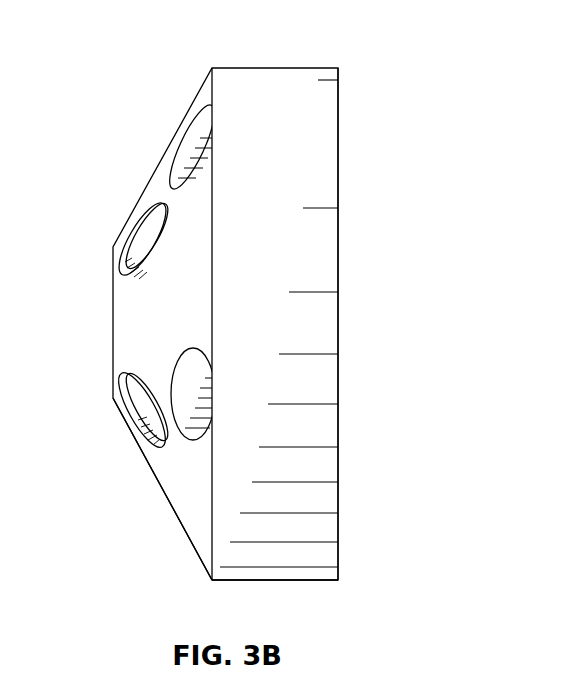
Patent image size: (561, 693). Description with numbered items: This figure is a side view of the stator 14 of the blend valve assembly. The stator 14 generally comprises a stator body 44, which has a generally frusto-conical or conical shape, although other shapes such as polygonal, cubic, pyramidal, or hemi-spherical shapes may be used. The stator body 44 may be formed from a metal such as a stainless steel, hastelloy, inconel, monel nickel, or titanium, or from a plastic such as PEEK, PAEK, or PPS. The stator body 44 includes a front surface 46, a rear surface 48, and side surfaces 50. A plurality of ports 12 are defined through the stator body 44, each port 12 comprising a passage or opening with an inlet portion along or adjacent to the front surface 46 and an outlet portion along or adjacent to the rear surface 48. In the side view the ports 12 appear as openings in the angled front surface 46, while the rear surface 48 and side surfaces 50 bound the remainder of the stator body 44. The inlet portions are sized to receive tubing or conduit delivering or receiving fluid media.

The ports 12 is at (130, 236).
The stator 14 is at (277, 67).
The stator body 44 is at (340, 130).
The front surface 46 is at (195, 515).
The rear surface 48 is at (340, 512).
The side surfaces 50 is at (285, 564).